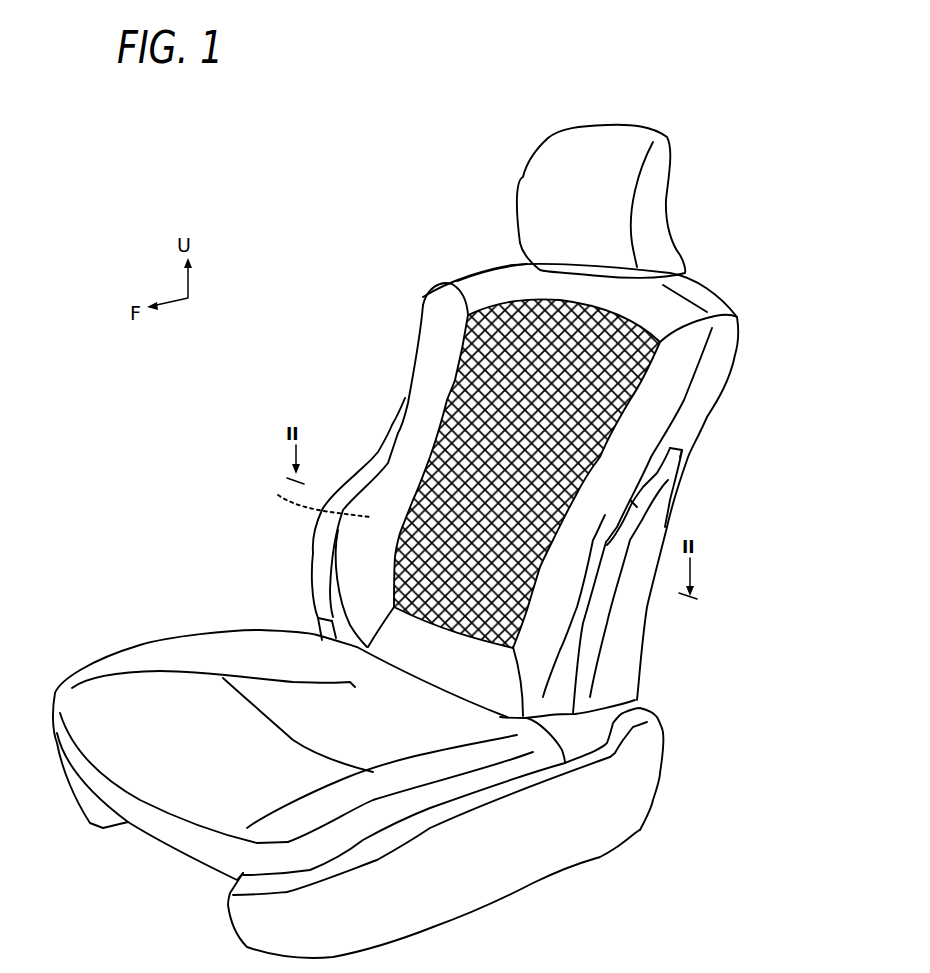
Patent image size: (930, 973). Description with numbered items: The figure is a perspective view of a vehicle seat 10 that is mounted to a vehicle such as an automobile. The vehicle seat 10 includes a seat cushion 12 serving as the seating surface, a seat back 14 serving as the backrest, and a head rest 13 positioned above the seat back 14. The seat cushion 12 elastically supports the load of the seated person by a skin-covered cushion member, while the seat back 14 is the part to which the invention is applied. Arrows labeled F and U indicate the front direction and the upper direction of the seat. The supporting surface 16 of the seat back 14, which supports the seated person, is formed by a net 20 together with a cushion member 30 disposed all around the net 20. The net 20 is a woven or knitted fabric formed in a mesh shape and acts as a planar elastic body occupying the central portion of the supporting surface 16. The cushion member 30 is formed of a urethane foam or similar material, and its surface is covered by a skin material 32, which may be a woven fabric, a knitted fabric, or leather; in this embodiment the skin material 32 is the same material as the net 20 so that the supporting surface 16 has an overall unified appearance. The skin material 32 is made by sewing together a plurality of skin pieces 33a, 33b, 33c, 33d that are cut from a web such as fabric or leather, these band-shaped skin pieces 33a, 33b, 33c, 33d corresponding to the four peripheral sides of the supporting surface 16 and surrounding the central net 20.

The vehicle seat 10 is at (433, 250).
The seat cushion 12 is at (172, 692).
The head rest 13 is at (549, 188).
The seat back 14 is at (432, 332).
The supporting surface 16 is at (499, 398).
The net 20 is at (446, 454).
The cushion member 30 is at (308, 499).
The skin material 32 is at (488, 461).
The skin piece 33a is at (667, 310).
The skin piece 33b is at (637, 425).
The skin piece 33c is at (440, 655).
The skin piece 33d is at (355, 567).